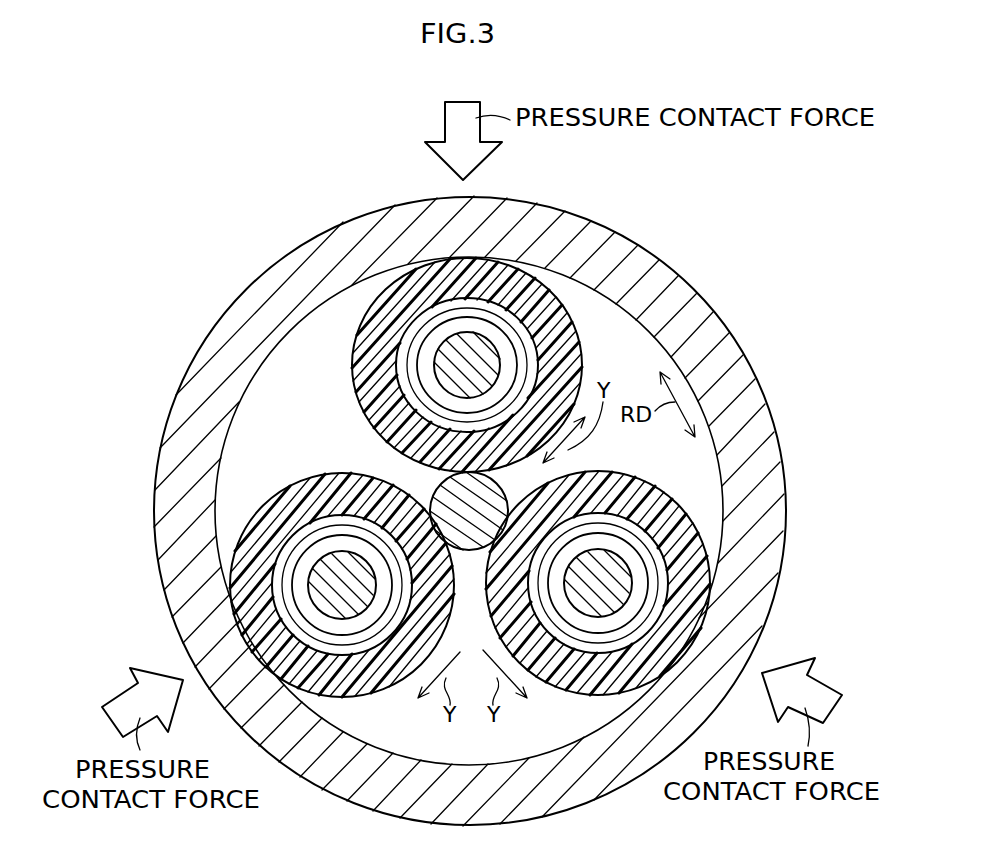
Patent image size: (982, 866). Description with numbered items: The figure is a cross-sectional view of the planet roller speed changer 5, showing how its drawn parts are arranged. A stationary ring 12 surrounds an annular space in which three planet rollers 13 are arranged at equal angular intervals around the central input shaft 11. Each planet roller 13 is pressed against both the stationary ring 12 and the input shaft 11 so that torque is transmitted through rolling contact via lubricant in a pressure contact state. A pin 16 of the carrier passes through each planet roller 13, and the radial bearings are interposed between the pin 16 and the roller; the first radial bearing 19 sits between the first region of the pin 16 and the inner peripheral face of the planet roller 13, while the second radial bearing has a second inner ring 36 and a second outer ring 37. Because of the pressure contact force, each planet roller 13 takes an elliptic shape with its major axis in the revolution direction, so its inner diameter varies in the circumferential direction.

The planet roller speed changer 5 is at (675, 221).
The input shaft 11 is at (470, 537).
The stationary ring 12 is at (750, 400).
The planet roller 13 is at (585, 361).
The pin 16 is at (448, 375).
The first radial bearing 19 is at (557, 350).
The second inner ring 36 is at (423, 367).
The second outer ring 37 is at (402, 345).